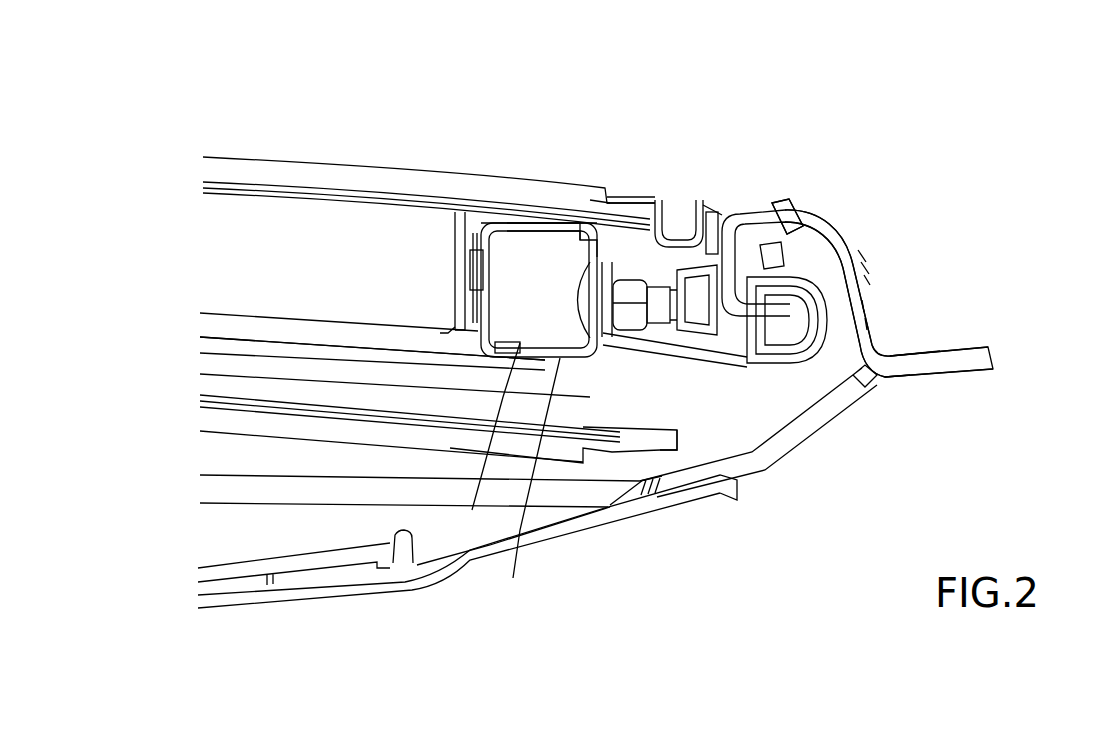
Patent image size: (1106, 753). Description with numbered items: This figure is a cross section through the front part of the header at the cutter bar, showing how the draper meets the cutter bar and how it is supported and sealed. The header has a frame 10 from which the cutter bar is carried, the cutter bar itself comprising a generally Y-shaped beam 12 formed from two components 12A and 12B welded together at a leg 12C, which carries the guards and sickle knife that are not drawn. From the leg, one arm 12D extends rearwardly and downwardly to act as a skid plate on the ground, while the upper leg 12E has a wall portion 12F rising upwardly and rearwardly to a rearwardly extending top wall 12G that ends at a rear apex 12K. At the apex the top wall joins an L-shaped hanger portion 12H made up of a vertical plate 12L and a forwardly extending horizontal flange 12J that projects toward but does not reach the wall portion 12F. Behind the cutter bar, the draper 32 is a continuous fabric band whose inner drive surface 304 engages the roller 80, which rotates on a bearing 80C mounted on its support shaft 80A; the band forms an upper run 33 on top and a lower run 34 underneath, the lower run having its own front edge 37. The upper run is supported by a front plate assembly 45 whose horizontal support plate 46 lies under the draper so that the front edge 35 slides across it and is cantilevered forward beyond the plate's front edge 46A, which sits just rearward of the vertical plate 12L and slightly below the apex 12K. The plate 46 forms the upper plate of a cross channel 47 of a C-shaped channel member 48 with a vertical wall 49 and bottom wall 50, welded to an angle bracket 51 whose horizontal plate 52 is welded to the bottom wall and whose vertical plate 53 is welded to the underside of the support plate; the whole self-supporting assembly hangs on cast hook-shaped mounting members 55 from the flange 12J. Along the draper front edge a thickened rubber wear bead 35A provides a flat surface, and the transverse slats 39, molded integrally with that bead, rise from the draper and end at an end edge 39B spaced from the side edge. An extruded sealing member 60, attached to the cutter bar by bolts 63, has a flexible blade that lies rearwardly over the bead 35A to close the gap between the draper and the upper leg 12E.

The frame 10 is at (580, 520).
The cutter bar support beam 12 is at (940, 273).
The first beam component 12A is at (930, 350).
The second beam component 12B is at (913, 387).
The leg 12C is at (973, 340).
The arm 12D is at (802, 450).
The upper leg 12E is at (860, 258).
The wall portion 12F is at (863, 288).
The top wall 12G is at (800, 220).
The L-shaped hanger portion 12H is at (732, 325).
The horizontal flange 12J is at (768, 330).
The rear apex 12K is at (730, 212).
The vertical plate 12L is at (757, 210).
The draper 32 is at (399, 185).
The upper run 33 is at (260, 188).
The lower run 34 is at (300, 407).
The front edge 35 is at (657, 207).
The rubber wear bead 35A is at (643, 210).
The front edge of lower run 37 is at (668, 430).
The transverse slats 39 is at (455, 185).
The end edge of slat 39B is at (610, 203).
The front plate assembly 45 is at (587, 190).
The support plate 46 is at (630, 210).
The front edge of support plate 46A is at (707, 203).
The cross channel 47 is at (471, 282).
The C-shaped channel member 48 is at (470, 241).
The vertical wall 49 is at (462, 321).
The bottom wall 50 is at (540, 333).
The angle bracket 51 is at (528, 484).
The horizontal plate 52 is at (480, 443).
The vertical plate of angle bracket 53 is at (615, 262).
The hook-shaped mounting members 55 is at (810, 343).
The sealing member 60 is at (847, 245).
The bolts 63 is at (793, 213).
The roller 80 is at (235, 287).
The support shaft 80A is at (520, 333).
The bearing 80C is at (447, 323).
The inner drive surface 304 is at (557, 410).